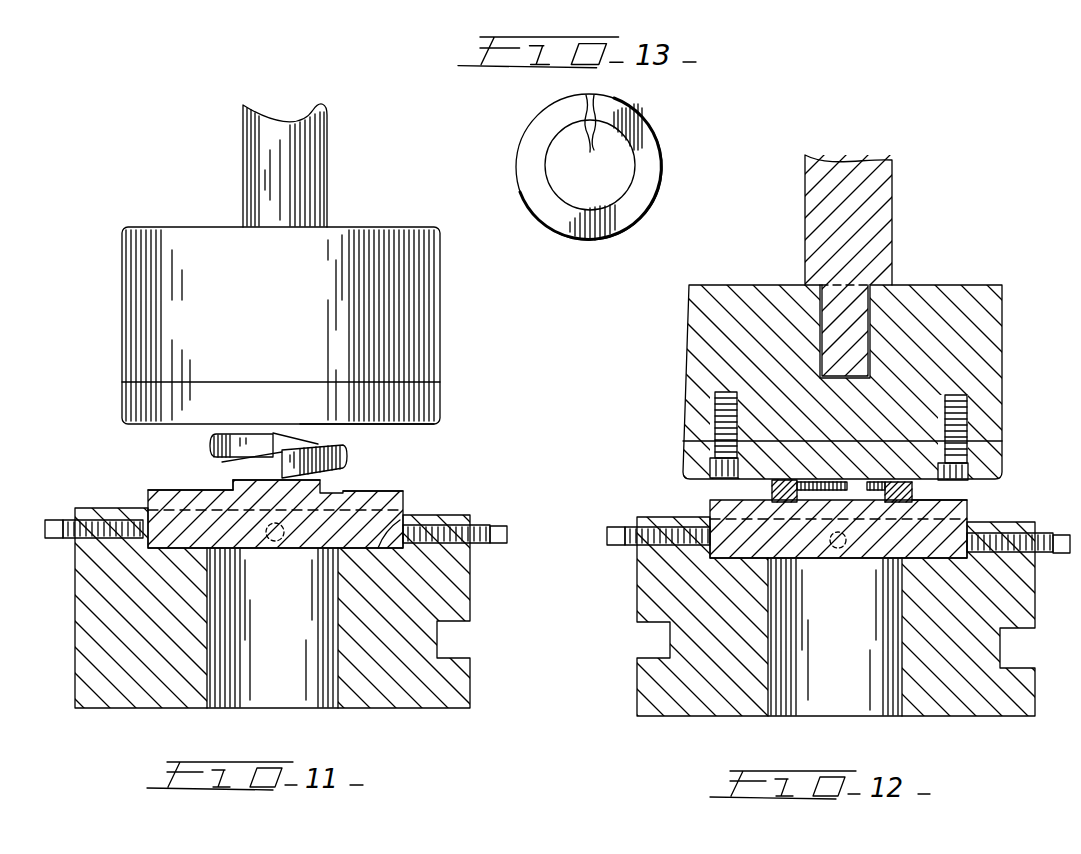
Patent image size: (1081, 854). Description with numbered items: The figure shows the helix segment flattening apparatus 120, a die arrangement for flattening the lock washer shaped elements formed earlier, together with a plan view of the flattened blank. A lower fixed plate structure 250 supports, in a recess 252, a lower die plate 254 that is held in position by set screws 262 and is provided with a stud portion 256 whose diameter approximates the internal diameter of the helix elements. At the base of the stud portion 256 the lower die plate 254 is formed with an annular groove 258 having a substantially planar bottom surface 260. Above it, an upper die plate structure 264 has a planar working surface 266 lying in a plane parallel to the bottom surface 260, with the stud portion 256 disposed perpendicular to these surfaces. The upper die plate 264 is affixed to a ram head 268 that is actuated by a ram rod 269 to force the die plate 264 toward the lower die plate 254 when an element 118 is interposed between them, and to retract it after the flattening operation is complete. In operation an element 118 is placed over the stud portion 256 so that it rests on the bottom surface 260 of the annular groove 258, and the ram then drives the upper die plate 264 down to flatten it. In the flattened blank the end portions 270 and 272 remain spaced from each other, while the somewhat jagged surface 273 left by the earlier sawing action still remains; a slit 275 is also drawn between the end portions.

In FIG. 11, the element 118 is at (353, 461).
In FIG. 12, the element 118 is at (913, 496).
In FIG. 11, the helix segment flattening apparatus 120 is at (110, 717).
In FIG. 12, the helix segment flattening apparatus 120 is at (610, 703).
In FIG. 11, the lower fixed plate structure 250 is at (76, 577).
In FIG. 12, the lower fixed plate structure 250 is at (645, 590).
In FIG. 11, the recess 252 is at (403, 514).
In FIG. 12, the recess 252 is at (540, 427).
In FIG. 11, the lower die plate 254 is at (403, 492).
In FIG. 12, the lower die plate 254 is at (967, 505).
In FIG. 11, the stud portion 256 is at (330, 479).
In FIG. 11, the annular groove 258 is at (222, 489).
In FIG. 11, the bottom surface 260 is at (213, 492).
In FIG. 11, the set screws 262 is at (76, 519).
In FIG. 12, the set screws 262 is at (612, 531).
In FIG. 11, the upper die plate structure 264 is at (387, 402).
In FIG. 12, the upper die plate structure 264 is at (775, 480).
In FIG. 11, the planar working surface 266 is at (393, 424).
In FIG. 11, the ram head 268 is at (372, 305).
In FIG. 12, the ram head 268 is at (950, 366).
In FIG. 11, the ram rod 269 is at (300, 186).
In FIG. 12, the ram rod 269 is at (887, 208).
In FIG. 13, the end portion 270 is at (607, 107).
In FIG. 13, the end portion 272 is at (582, 106).
In FIG. 13, the surface 273 is at (590, 165).
In FIG. 13, the slit 275 is at (590, 98).